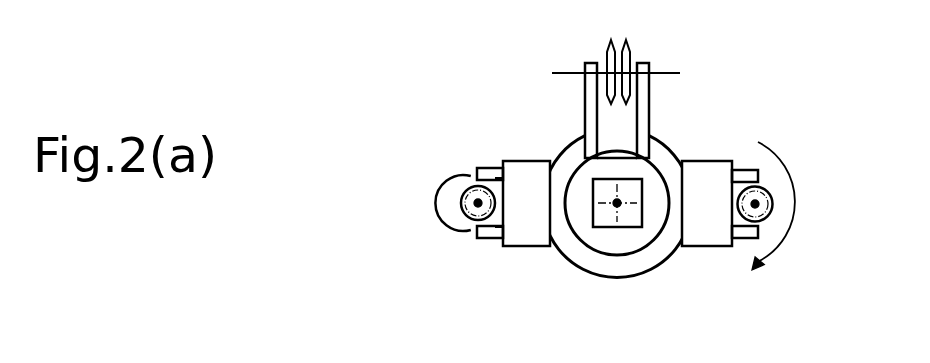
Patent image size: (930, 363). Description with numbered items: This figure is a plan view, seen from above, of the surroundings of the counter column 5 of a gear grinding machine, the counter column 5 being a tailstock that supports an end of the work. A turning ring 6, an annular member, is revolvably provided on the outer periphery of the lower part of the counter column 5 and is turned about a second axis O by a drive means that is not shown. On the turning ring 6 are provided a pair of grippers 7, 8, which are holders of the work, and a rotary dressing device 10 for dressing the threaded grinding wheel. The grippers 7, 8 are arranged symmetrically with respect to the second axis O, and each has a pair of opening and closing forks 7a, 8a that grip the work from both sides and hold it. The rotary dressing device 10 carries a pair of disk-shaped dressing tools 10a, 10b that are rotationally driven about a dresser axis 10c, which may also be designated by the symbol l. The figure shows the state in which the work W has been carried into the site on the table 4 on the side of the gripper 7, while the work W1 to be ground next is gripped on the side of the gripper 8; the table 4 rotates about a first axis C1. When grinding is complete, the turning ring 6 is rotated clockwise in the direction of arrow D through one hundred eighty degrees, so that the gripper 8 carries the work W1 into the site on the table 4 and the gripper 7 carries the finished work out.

The table 4 is at (466, 175).
The counter column 5 is at (605, 243).
The turning ring 6 is at (620, 266).
The gripper 7 is at (528, 246).
The opening and closing forks 7a is at (490, 168).
The gripper 8 is at (698, 246).
The opening and closing forks 8a is at (745, 168).
The rotary dressing device 10 is at (678, 57).
The dressing tool 10a is at (605, 56).
The dressing tool 10b is at (632, 43).
The dresser axis 10c is at (552, 73).
The first axis C1 is at (476, 202).
The work W is at (463, 207).
The work to be ground next W1 is at (775, 197).
The second axis O is at (617, 203).
The arrow (direction of rotation) D is at (802, 227).